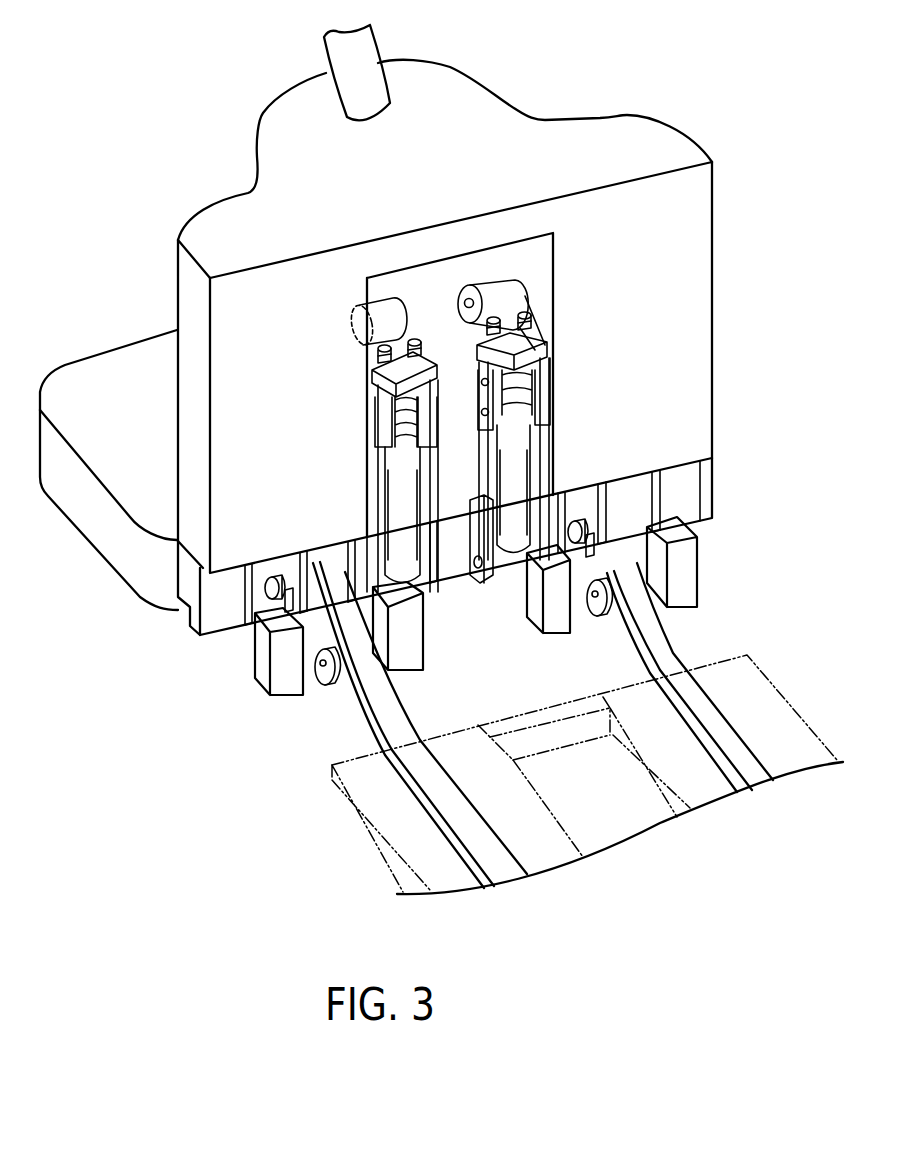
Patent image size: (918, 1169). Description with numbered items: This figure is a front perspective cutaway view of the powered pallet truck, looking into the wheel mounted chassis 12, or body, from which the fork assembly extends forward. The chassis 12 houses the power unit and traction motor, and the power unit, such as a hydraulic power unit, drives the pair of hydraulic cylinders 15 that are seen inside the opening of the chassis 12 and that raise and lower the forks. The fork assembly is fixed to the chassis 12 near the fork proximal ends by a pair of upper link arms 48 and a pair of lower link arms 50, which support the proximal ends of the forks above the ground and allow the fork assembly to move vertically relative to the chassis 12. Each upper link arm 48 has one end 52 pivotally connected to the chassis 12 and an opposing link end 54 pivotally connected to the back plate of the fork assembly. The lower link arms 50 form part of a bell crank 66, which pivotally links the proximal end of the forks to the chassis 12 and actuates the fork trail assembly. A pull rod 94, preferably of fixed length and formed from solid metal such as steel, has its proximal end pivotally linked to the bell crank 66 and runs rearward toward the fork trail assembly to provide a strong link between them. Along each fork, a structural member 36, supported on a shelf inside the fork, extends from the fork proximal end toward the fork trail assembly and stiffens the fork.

The chassis 12 is at (673, 140).
The hydraulic cylinders 15 is at (507, 497).
The structural member 36 is at (263, 680).
The upper link arms 48 is at (378, 357).
The lower link arms 50 is at (275, 640).
The end 52 is at (490, 290).
The link end 54 is at (402, 399).
The bell crank 66 is at (330, 687).
The pull rod 94 is at (732, 723).